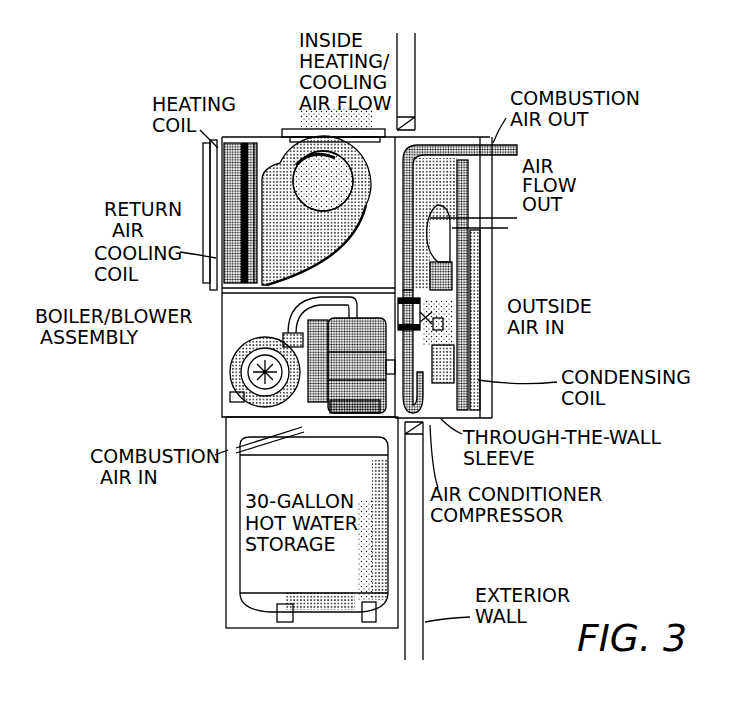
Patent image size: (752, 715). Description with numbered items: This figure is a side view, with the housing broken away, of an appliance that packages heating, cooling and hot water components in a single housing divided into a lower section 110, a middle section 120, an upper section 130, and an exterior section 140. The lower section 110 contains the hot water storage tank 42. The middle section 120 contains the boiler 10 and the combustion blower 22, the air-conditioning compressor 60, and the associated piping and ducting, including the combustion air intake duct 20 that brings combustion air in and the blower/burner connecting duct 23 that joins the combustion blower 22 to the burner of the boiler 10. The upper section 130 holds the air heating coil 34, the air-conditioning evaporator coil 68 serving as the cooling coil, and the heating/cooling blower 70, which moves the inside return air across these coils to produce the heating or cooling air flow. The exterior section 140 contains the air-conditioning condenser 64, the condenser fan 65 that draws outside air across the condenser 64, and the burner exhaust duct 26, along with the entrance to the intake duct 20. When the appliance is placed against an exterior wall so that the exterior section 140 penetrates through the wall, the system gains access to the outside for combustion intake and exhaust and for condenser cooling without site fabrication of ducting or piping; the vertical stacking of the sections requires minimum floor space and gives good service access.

The boiler 10 is at (310, 320).
The combustion air intake duct 20 is at (300, 413).
The combustion blower 22 is at (230, 373).
The blower/burner connecting duct 23 is at (352, 298).
The burner exhaust duct 26 is at (461, 143).
The air heating coil 34 is at (256, 142).
The hot water storage tank 42 is at (238, 562).
The air-conditioning compressor 60 is at (344, 413).
The air-conditioning condenser 64 is at (482, 270).
The condenser fan 65 is at (430, 248).
The air-conditioning evaporator coil 68 is at (213, 180).
The heating/cooling blower 70 is at (362, 203).
The lower section 110 is at (226, 516).
The middle section 120 is at (230, 398).
The upper section 130 is at (281, 133).
The exterior section 140 is at (430, 137).